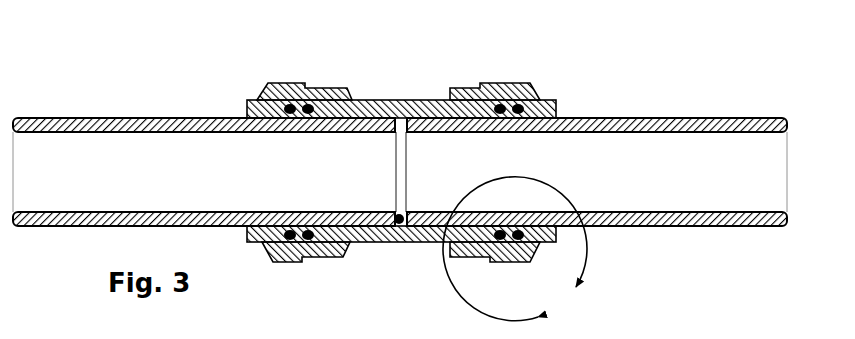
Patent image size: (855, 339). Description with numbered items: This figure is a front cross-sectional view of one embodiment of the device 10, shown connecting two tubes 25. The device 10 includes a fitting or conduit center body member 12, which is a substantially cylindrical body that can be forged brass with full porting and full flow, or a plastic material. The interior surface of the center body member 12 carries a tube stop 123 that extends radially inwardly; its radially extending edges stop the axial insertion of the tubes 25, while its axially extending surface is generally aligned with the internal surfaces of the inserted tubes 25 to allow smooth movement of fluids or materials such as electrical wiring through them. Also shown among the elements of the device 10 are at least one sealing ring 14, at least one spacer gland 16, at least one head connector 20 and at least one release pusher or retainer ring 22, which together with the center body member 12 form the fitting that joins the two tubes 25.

The device 10 is at (660, 61).
The center body member 12 is at (395, 99).
The sealing ring 14 is at (309, 112).
The spacer gland 16 is at (289, 110).
The head connector 20 is at (277, 82).
The release pusher or retainer ring 22 is at (244, 112).
The tubes 25 is at (130, 118).
The tube stop 123 is at (395, 227).